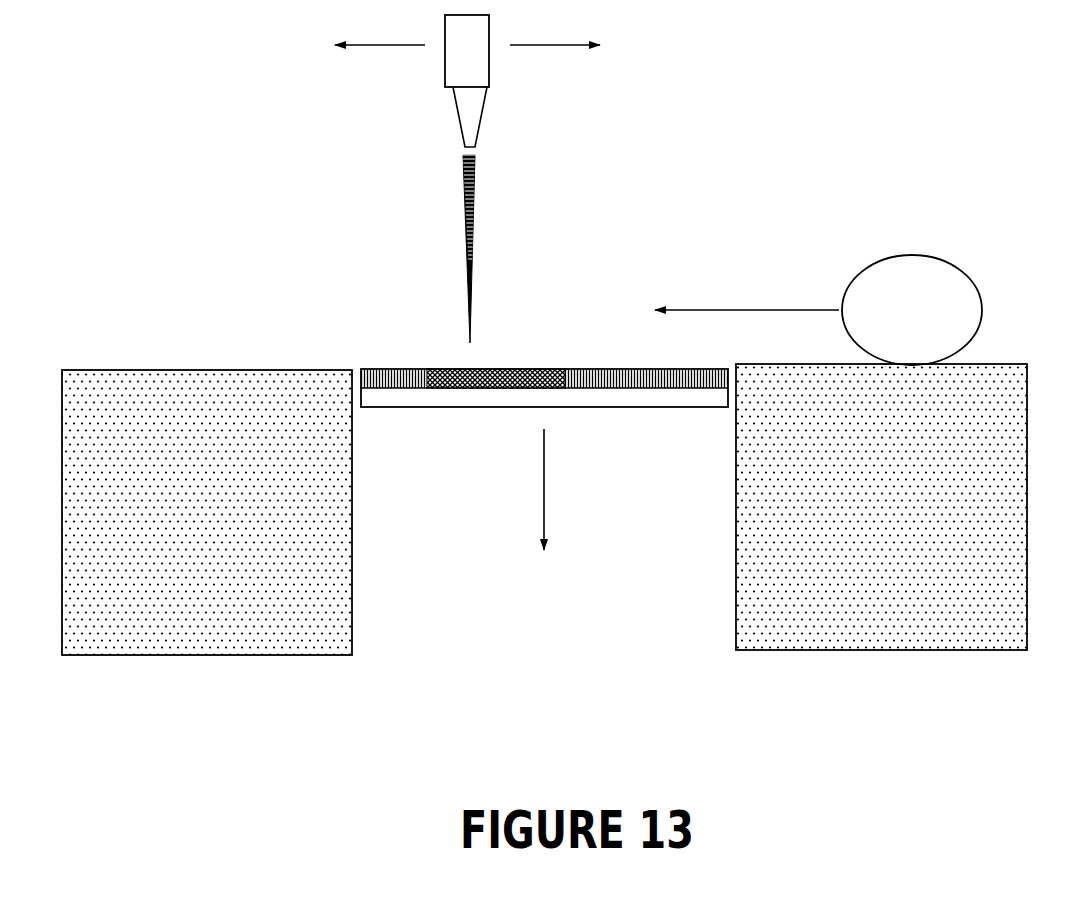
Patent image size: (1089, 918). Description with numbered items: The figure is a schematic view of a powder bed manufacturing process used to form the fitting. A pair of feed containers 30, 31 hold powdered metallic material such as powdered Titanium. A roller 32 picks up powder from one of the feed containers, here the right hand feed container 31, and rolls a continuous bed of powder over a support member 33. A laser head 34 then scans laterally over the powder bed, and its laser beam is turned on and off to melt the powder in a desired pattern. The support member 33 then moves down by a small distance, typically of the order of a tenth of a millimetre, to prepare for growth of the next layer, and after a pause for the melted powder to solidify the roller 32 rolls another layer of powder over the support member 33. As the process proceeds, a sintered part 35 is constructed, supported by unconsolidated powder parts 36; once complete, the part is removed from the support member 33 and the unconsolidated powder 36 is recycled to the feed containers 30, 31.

The feed container 30 is at (350, 569).
The feed container 31 is at (1020, 561).
The roller 32 is at (911, 255).
The support member 33 is at (420, 400).
The laser head 34 is at (485, 75).
The sintered part 35 is at (489, 389).
The unconsolidated powder parts 36 is at (402, 369).